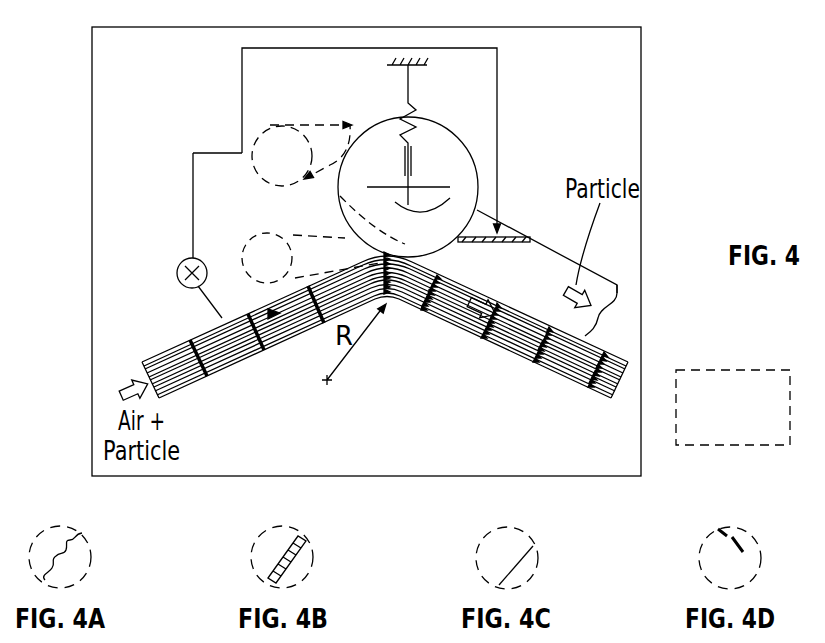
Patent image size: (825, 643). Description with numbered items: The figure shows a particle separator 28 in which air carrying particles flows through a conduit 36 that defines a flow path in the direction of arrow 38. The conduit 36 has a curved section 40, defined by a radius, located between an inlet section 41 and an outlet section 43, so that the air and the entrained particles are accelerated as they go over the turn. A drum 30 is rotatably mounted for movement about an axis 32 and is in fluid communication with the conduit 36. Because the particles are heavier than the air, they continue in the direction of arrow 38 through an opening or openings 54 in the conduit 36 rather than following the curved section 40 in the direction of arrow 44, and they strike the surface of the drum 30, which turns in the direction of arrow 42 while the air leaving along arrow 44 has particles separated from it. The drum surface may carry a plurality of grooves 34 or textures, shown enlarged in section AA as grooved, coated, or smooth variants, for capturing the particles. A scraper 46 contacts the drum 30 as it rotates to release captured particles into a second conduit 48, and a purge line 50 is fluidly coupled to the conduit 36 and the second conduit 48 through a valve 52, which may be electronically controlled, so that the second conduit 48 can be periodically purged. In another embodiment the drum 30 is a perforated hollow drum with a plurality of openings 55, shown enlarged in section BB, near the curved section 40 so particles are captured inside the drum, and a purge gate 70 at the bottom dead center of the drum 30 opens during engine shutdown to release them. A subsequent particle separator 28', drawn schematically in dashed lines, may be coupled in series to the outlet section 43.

In FIG. 4, the particle separator 28 is at (418, 251).
In FIG. 4, the subsequent particle separator 28' is at (733, 373).
In FIG. 4, the drum 30 is at (420, 120).
In FIG. 4, the axis 32 is at (423, 174).
In FIG. 4, the grooves 34 is at (283, 127).
In FIG. 4, the conduit 36 is at (165, 372).
In FIG. 4, the flow direction arrow 38 is at (178, 365).
In FIG. 4, the curved section 40 is at (405, 316).
In FIG. 4, the inlet section 41 is at (245, 360).
In FIG. 4, the drum rotation arrow 42 is at (447, 212).
In FIG. 4, the outlet section 43 is at (608, 348).
In FIG. 4, the air flow arrow 44 is at (485, 314).
In FIG. 4, the scraper 46 is at (530, 240).
In FIG. 4, the second conduit 48 is at (600, 278).
In FIG. 4, the purge line 50 is at (210, 153).
In FIG. 4, the valve 52 is at (178, 272).
In FIG. 4, the openings 54 is at (372, 250).
In FIG. 4D, the openings 55 is at (728, 533).
In FIG. 4, the purge gate 70 is at (340, 197).